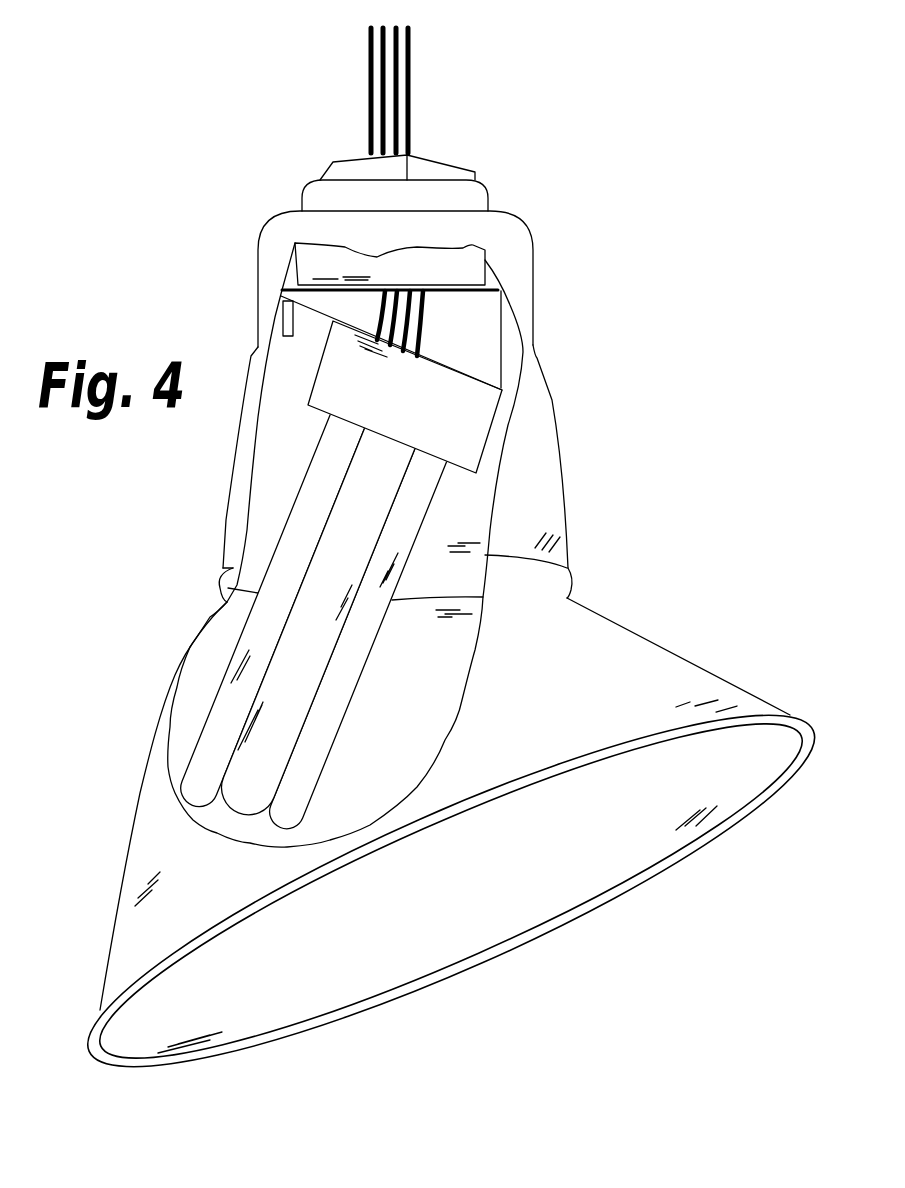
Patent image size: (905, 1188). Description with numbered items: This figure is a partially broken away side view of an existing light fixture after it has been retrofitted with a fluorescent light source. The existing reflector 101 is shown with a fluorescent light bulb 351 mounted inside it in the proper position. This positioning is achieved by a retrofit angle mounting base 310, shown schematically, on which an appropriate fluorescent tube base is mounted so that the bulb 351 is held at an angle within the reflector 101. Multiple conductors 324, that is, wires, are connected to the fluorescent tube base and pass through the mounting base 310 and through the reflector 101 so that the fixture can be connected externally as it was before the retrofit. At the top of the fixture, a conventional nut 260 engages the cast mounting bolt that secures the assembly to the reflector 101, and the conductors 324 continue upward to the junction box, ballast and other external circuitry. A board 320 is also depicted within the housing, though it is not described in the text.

The reflector 101 is at (547, 593).
The nut 260 is at (318, 193).
The retrofit angle mounting base 310 is at (480, 336).
The circuit board 320 is at (447, 431).
The conductors 324 is at (415, 78).
The fluorescent light bulb 351 is at (212, 782).